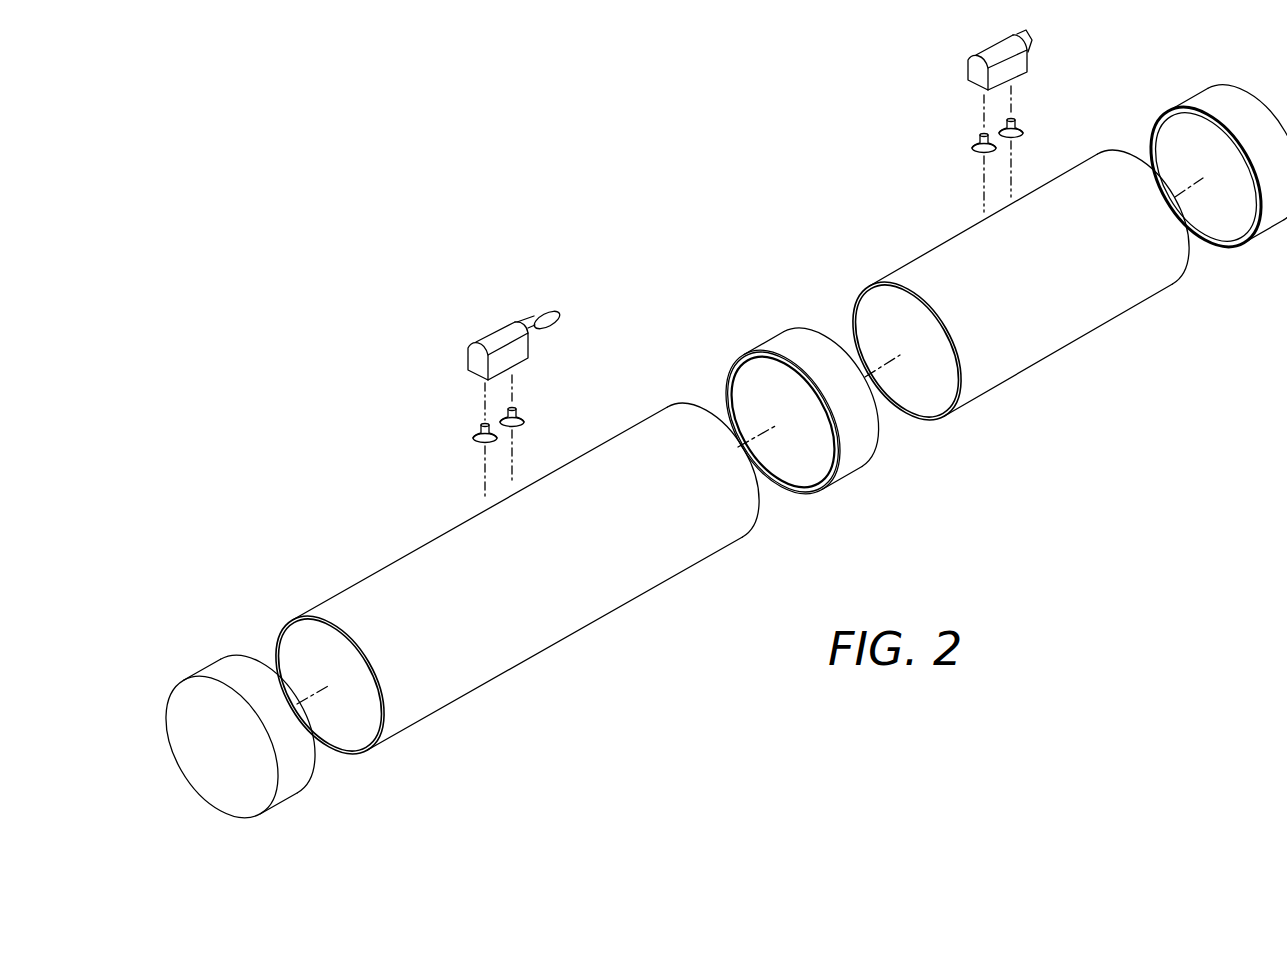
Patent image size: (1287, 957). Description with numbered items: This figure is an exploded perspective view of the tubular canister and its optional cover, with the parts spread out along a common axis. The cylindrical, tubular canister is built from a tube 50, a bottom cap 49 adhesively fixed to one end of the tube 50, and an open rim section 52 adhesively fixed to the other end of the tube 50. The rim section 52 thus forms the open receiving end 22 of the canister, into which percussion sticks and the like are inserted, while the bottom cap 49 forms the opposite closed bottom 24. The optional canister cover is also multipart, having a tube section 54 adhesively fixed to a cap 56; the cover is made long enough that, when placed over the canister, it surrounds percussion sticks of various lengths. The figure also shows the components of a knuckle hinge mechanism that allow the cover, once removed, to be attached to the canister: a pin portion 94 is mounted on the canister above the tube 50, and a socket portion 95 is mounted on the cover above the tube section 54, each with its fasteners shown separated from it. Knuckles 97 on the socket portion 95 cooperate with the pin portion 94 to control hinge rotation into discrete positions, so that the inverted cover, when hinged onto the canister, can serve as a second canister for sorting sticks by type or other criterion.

The open receiving end 22 is at (732, 513).
The closed bottom 24 is at (390, 708).
The bottom cap 49 is at (283, 787).
The tube 50 is at (560, 605).
The open rim section 52 is at (847, 467).
The tube section 54 is at (1062, 327).
The cap 56 is at (1218, 233).
The pin portion 94 is at (502, 338).
The socket portion 95 is at (988, 53).
The knuckles 97 is at (1027, 52).